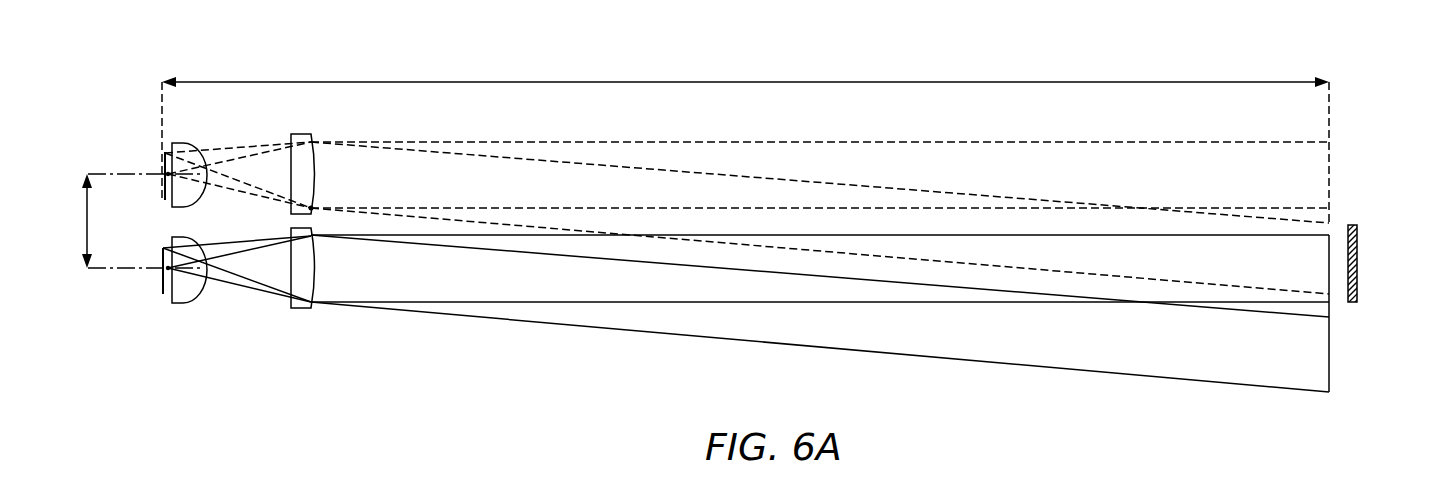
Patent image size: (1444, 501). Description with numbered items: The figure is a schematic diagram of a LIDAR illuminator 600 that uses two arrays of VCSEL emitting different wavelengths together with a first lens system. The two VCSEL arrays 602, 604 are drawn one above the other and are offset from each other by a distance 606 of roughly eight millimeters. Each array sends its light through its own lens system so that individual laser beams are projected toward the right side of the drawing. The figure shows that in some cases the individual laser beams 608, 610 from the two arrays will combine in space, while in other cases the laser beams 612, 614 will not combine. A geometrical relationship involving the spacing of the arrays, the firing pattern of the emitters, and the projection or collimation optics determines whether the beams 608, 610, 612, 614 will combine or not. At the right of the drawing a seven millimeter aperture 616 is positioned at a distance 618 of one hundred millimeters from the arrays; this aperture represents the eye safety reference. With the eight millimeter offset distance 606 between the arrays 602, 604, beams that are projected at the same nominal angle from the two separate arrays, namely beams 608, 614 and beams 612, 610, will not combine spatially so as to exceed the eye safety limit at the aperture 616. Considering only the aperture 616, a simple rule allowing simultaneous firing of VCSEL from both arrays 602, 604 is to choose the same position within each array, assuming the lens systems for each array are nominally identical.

The LIDAR illuminator 600 is at (162, 39).
The VCSEL array 602 is at (163, 157).
The VCSEL array 604 is at (163, 285).
The offset distance 606 is at (88, 222).
The laser beam 608 is at (1313, 230).
The laser beam 610 is at (1313, 297).
The laser beam 612 is at (1308, 173).
The laser beam 614 is at (1230, 370).
The aperture 616 is at (1358, 262).
The distance 618 is at (745, 80).